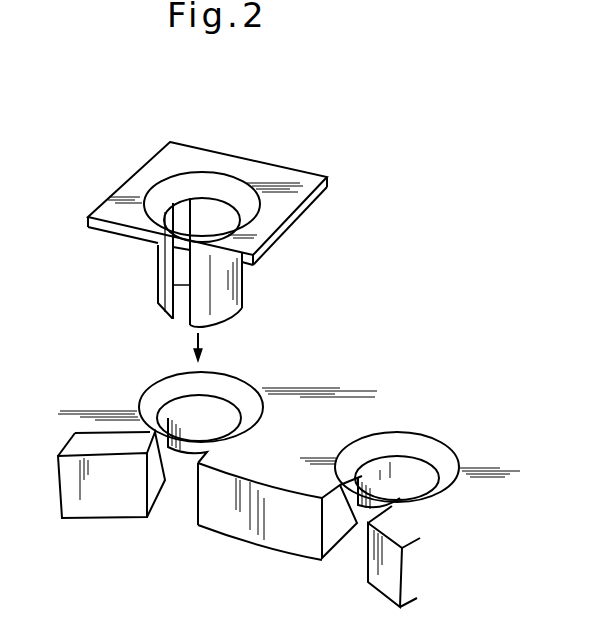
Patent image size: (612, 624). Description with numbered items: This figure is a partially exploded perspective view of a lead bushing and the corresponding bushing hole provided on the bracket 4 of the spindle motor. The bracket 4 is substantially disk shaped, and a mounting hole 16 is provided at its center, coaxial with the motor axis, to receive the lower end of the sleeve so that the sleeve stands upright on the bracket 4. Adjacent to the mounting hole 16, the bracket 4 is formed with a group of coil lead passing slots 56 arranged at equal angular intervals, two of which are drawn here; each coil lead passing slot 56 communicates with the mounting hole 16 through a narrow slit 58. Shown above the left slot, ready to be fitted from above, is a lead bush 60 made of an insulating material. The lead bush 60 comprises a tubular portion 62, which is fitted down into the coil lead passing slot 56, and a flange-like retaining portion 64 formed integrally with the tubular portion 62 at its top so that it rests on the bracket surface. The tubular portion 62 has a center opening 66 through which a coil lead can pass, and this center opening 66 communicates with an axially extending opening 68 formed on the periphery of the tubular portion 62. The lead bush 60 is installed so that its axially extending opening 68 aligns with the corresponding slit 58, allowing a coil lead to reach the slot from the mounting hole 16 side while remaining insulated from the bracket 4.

The bracket 4 is at (90, 437).
The mounting hole 16 is at (108, 510).
The coil lead passing slot 56 is at (220, 410).
The slit 58 is at (155, 487).
The lead bush 60 is at (305, 163).
The tubular portion 62 is at (240, 288).
The flange-like retaining portion 64 is at (150, 170).
The center opening 66 is at (208, 208).
The axially extending opening 68 is at (177, 273).